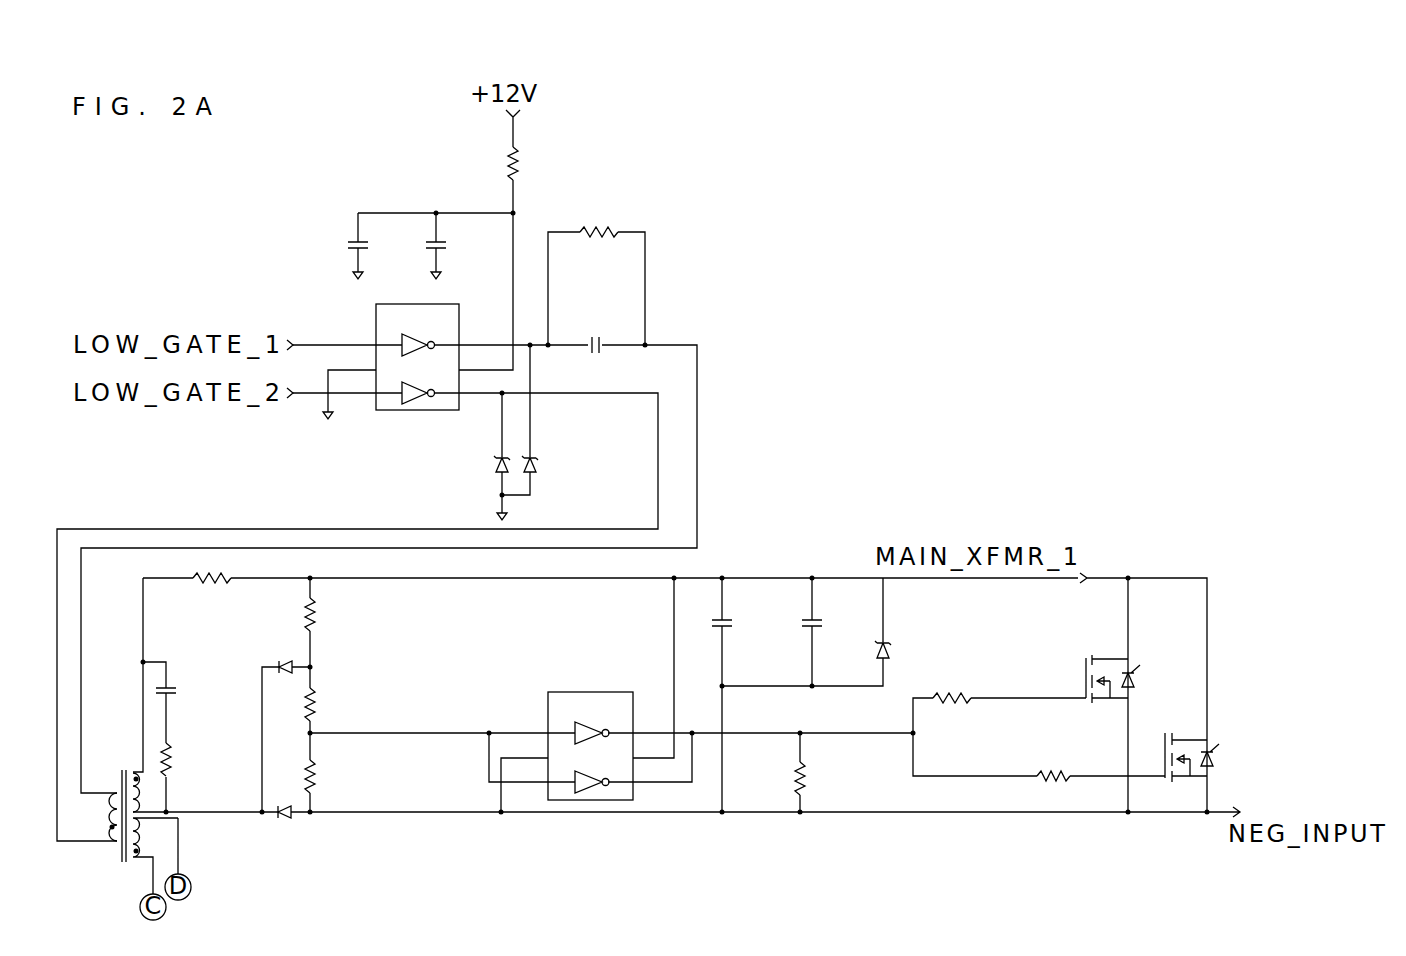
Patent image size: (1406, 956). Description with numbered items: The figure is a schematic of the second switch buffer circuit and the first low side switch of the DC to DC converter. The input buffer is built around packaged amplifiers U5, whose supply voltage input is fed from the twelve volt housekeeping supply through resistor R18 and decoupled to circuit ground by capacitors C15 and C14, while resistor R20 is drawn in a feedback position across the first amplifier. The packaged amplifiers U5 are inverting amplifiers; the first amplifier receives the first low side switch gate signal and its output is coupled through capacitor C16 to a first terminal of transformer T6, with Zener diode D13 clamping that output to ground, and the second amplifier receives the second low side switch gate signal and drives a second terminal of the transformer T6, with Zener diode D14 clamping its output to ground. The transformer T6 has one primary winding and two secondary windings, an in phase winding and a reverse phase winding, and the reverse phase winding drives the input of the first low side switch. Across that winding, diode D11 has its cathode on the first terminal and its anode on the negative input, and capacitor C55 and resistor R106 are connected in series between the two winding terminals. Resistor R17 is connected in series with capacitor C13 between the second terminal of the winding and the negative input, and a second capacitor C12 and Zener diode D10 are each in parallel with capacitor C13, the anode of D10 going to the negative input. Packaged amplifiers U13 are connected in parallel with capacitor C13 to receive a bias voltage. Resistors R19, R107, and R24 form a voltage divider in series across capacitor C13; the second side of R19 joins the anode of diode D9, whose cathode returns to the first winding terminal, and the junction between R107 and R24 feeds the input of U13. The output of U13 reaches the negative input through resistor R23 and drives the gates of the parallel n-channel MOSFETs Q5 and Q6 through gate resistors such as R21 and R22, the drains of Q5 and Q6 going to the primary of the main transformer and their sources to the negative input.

The resistor R18 is at (540, 163).
The capacitor C15 is at (382, 246).
The capacitor C14 is at (461, 246).
The resistor R20 is at (598, 218).
The capacitor C16 is at (591, 329).
The packaged amplifiers U5 is at (417, 376).
The Zener diode D14 is at (475, 465).
The Zener diode D13 is at (561, 465).
The resistor R17 is at (215, 564).
The resistor R19 is at (337, 615).
The diode D9 is at (282, 654).
The resistor R107 is at (346, 696).
The resistor R24 is at (341, 776).
The capacitor C55 is at (198, 692).
The resistor R106 is at (202, 761).
The diode D11 is at (283, 827).
The transformer T6 is at (140, 832).
The packaged amplifiers U13 is at (584, 731).
The capacitor C13 is at (747, 624).
The second capacitor C12 is at (837, 624).
The Zener diode D10 is at (911, 652).
The resistor R23 is at (832, 779).
The resistor R21 is at (952, 713).
The resistor R22 is at (1053, 760).
The first n-channel MOSFET Q5 is at (1103, 667).
The second n-channel MOSFET Q6 is at (1211, 757).